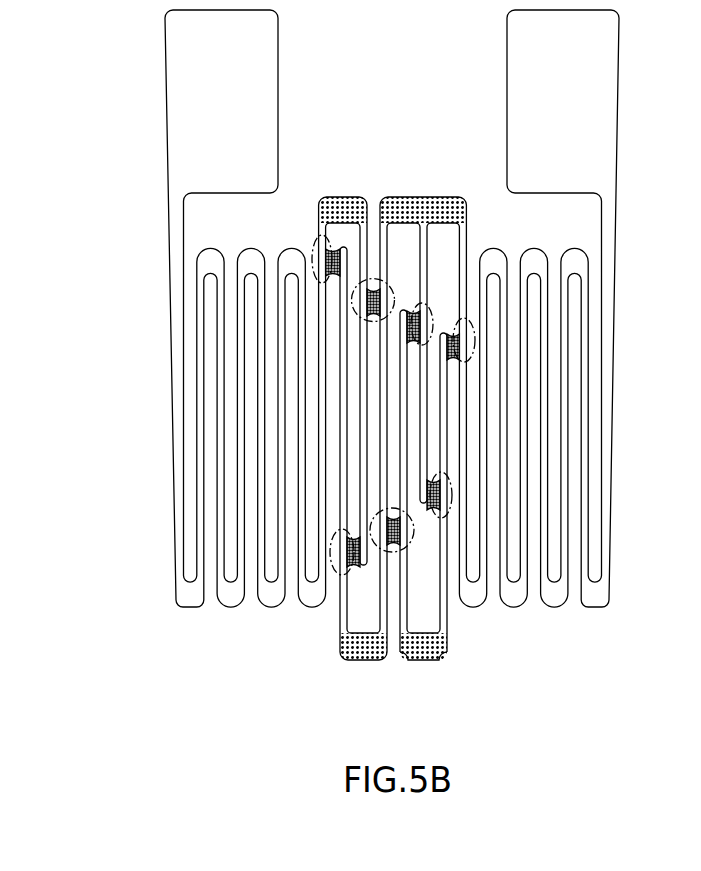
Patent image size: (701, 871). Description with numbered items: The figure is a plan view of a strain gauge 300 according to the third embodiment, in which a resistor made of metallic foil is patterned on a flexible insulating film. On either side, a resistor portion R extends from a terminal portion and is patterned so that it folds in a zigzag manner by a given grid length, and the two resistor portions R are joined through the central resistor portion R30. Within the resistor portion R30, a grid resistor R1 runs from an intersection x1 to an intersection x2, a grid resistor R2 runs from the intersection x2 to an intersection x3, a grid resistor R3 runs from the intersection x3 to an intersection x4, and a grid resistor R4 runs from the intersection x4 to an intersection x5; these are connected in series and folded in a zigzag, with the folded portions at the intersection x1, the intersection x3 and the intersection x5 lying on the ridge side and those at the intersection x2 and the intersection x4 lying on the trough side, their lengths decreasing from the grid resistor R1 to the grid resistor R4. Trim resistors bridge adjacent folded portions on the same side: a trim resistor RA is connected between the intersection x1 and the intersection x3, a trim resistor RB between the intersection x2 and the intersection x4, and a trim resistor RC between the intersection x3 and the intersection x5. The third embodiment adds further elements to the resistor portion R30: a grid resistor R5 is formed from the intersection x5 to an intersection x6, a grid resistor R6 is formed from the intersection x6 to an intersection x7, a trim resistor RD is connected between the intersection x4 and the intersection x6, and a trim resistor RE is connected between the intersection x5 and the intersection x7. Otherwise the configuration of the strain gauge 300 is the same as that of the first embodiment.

The strain gauge 300 is at (126, 62).
The resistor portion R is at (323, 612).
The resistor portion R30 is at (320, 118).
The trim resistor RA is at (340, 210).
The trim resistor RB is at (365, 660).
The trim resistor RC is at (397, 212).
The trim resistor RD is at (425, 660).
The trim resistor RE is at (447, 212).
The grid resistor R1 is at (340, 337).
The grid resistor R2 is at (360, 363).
The grid resistor R3 is at (382, 395).
The grid resistor R4 is at (400, 413).
The grid resistor R5 is at (422, 444).
The grid resistor R6 is at (447, 420).
The intersection x1 is at (312, 247).
The intersection x2 is at (330, 552).
The intersection x3 is at (392, 291).
The intersection x4 is at (414, 540).
The intersection x5 is at (433, 318).
The intersection x6 is at (452, 500).
The intersection x7 is at (475, 335).